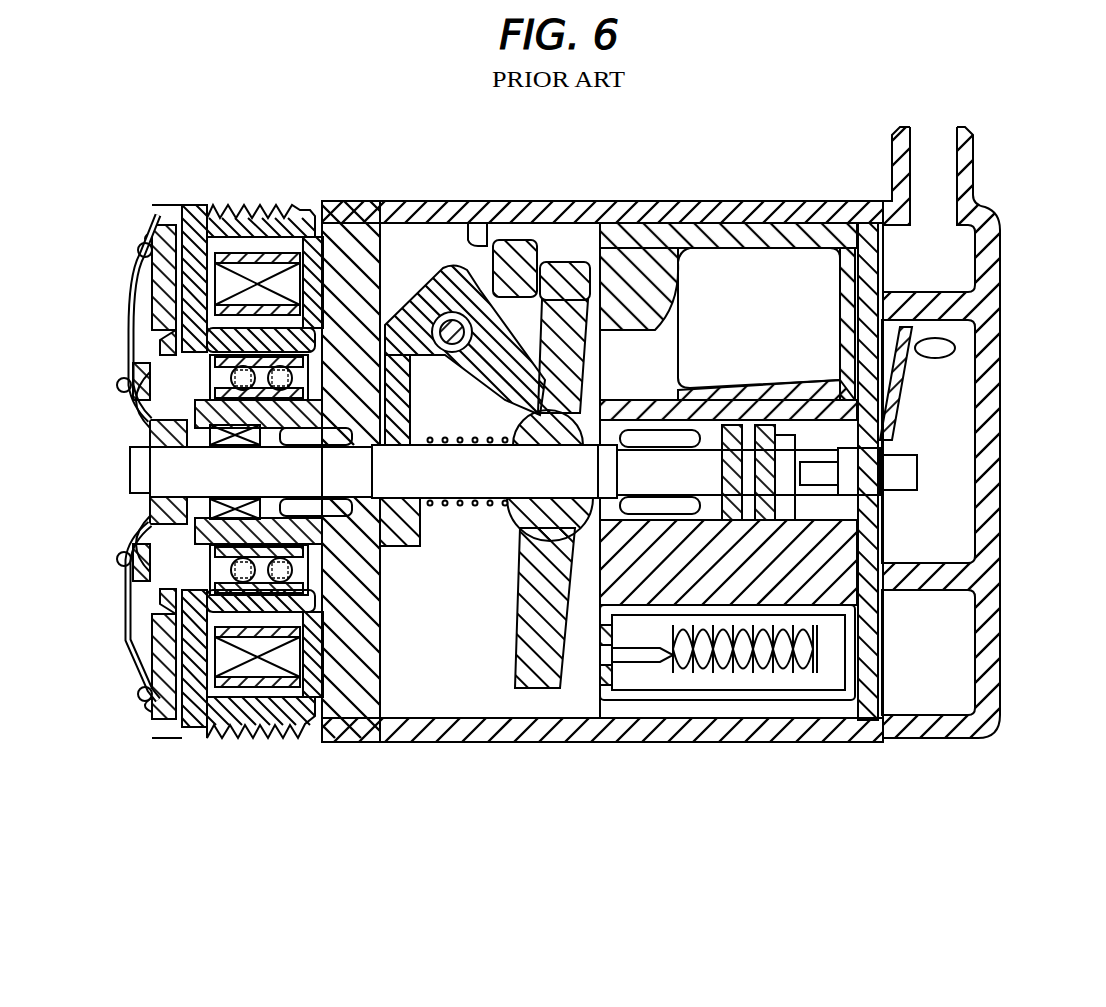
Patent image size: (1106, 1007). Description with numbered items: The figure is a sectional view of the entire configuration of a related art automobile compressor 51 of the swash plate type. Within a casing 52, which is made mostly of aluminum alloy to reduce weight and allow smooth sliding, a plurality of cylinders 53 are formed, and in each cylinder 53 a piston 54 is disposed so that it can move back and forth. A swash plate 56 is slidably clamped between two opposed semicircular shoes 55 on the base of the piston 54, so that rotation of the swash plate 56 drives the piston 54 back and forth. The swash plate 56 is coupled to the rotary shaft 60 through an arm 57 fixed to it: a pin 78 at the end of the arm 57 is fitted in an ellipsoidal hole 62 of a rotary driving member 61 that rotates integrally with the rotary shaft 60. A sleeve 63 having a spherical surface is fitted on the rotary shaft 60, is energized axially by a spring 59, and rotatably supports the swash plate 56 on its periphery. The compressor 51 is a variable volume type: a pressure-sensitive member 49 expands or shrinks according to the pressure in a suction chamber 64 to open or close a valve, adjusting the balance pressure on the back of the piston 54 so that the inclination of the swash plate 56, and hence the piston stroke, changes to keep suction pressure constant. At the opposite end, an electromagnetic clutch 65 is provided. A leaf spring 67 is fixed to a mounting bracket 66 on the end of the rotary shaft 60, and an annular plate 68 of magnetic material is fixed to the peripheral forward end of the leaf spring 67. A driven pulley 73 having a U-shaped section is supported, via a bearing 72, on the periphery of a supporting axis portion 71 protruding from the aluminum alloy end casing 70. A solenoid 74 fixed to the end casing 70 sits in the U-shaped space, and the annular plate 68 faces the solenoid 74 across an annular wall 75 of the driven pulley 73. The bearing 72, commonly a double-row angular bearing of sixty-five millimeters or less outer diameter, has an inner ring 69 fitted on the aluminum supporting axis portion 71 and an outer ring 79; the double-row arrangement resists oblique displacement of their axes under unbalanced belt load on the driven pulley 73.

The pressure-sensitive member 49 is at (738, 690).
The compressor 51 is at (695, 420).
The casing 52 is at (653, 212).
The cylinder 53 is at (773, 247).
The piston 54 is at (823, 243).
The semicircular shoe 55 is at (540, 290).
The swash plate 56 is at (560, 355).
The arm 57 is at (555, 385).
The spring 59 is at (482, 503).
The rotary shaft 60 is at (432, 482).
The rotary driving member 61 is at (418, 398).
The ellipsoidal hole 62 is at (445, 290).
The sleeve 63 is at (517, 505).
The suction chamber 64 is at (960, 262).
The electromagnetic clutch 65 is at (165, 210).
The mounting bracket 66 is at (137, 418).
The leaf spring 67 is at (127, 325).
The annular plate 68 is at (163, 302).
The inner ring 69 is at (137, 395).
The end casing 70 is at (348, 220).
The supporting axis portion 71 is at (147, 433).
The bearing 72 is at (193, 378).
The driven pulley 73 is at (300, 217).
The solenoid 74 is at (260, 270).
The annular wall 75 is at (148, 273).
The pin 78 is at (475, 300).
The outer ring 79 is at (133, 343).